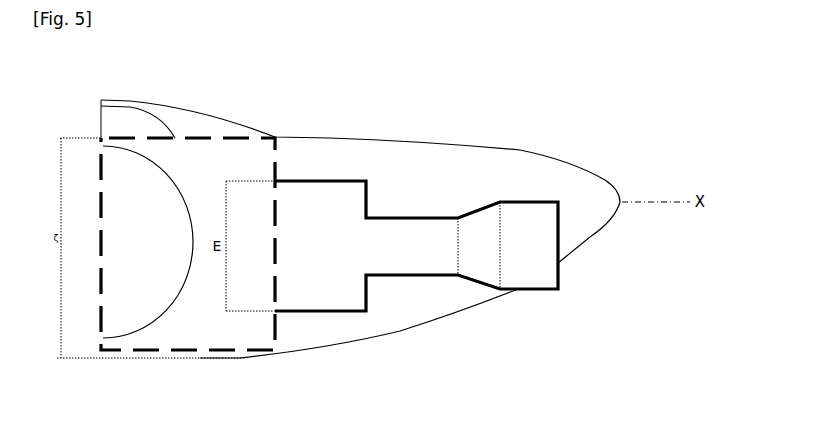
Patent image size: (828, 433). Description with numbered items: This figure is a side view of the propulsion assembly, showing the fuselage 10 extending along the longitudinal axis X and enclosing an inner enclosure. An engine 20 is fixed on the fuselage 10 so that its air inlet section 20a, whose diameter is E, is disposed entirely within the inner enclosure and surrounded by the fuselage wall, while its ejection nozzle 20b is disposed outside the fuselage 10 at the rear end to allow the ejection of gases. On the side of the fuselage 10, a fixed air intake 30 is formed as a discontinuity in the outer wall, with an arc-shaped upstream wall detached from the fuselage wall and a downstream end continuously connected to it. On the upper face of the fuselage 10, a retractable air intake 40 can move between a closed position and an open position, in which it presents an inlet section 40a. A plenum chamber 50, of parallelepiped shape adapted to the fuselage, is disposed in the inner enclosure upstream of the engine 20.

The fuselage 10 is at (326, 150).
The engine 20 is at (415, 225).
The air inlet section 20a is at (273, 235).
The ejection nozzle 20b is at (541, 280).
The fixed air intake 30 is at (119, 313).
The retractable air intake 40 is at (150, 107).
The inlet section of the retractable air intake 40a is at (101, 124).
The plenum chamber 50 is at (193, 332).